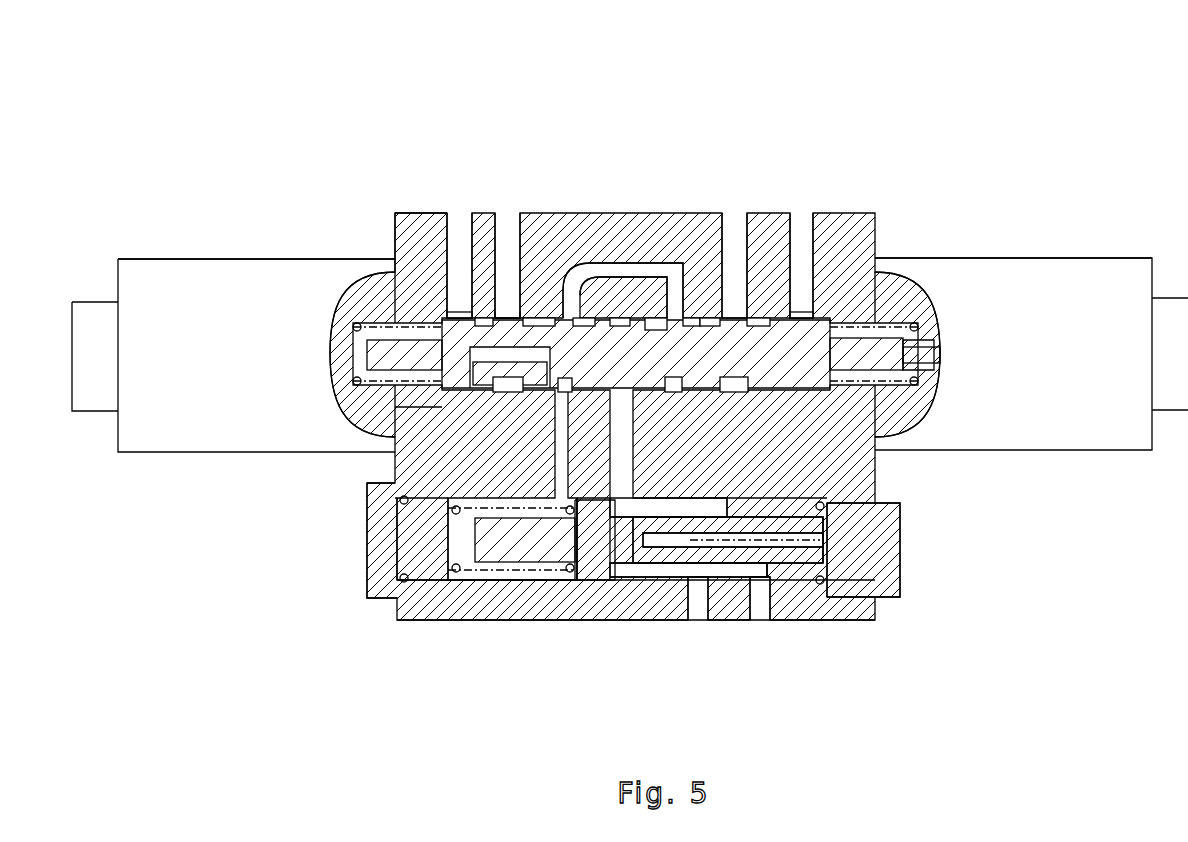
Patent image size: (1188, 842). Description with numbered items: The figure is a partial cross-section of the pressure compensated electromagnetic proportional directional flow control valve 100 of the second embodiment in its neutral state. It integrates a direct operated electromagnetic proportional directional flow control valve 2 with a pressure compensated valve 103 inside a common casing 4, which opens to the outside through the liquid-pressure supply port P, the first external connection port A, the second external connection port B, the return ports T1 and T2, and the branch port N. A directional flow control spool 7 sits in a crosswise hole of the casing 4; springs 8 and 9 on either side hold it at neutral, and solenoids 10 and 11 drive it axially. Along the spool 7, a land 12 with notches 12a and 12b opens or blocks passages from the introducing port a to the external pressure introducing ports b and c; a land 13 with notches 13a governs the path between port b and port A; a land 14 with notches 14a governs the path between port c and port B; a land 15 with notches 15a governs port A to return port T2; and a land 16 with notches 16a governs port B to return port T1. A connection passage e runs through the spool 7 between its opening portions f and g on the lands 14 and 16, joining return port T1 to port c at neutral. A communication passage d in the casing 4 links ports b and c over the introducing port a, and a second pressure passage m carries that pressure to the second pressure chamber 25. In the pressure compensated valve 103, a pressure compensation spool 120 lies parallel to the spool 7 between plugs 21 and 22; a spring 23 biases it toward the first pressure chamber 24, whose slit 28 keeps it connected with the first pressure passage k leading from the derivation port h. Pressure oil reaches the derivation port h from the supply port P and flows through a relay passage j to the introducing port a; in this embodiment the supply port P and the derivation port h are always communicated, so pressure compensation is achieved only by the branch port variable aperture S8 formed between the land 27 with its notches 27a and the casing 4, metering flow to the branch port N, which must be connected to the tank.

The pressure compensated electromagnetic proportional directional flow control valve 100 is at (266, 136).
The electromagnetic proportional directional flow control valve 2 is at (395, 228).
The casing 4 is at (876, 222).
The directional flow control spool 7 is at (807, 327).
The spring 8 is at (893, 320).
The spring 9 is at (360, 300).
The solenoid 10 is at (1100, 258).
The solenoid 11 is at (155, 262).
The land 12 is at (636, 320).
The notches 12a is at (655, 322).
The notches 12b is at (576, 318).
The land 13 is at (683, 320).
The notches 13a is at (722, 320).
The land 14 is at (550, 318).
The notches 14a is at (510, 352).
The land 15 is at (780, 323).
The notches 15a is at (760, 330).
The land 16 is at (455, 313).
The notches 16a is at (487, 318).
The plug 21 is at (905, 588).
The plug 22 is at (375, 580).
The spring 23 is at (490, 595).
The first pressure chamber 24 is at (822, 582).
The second pressure chamber 25 is at (445, 580).
The land 27 is at (700, 575).
The notches 27a is at (750, 552).
The slit 28 is at (820, 520).
The pressure compensated valve 103 is at (413, 620).
The pressure compensation spool 120 is at (550, 562).
The introducing port a is at (622, 320).
The external pressure introducing port b is at (668, 322).
The external pressure introducing port c is at (567, 320).
The communication passage d is at (606, 263).
The connection passage e is at (493, 318).
The opening portion f is at (553, 392).
The opening portion g is at (437, 382).
The derivation port h is at (627, 515).
The relay passage j is at (593, 520).
The first pressure passage k is at (798, 580).
The second pressure passage m is at (545, 540).
The branch port variable aperture S8 is at (670, 545).
The return port T1 is at (458, 254).
The return port T2 is at (802, 254).
The first external connection port A is at (734, 254).
The second external connection port B is at (507, 254).
The liquid-pressure supply port P is at (698, 612).
The branch port N is at (760, 612).